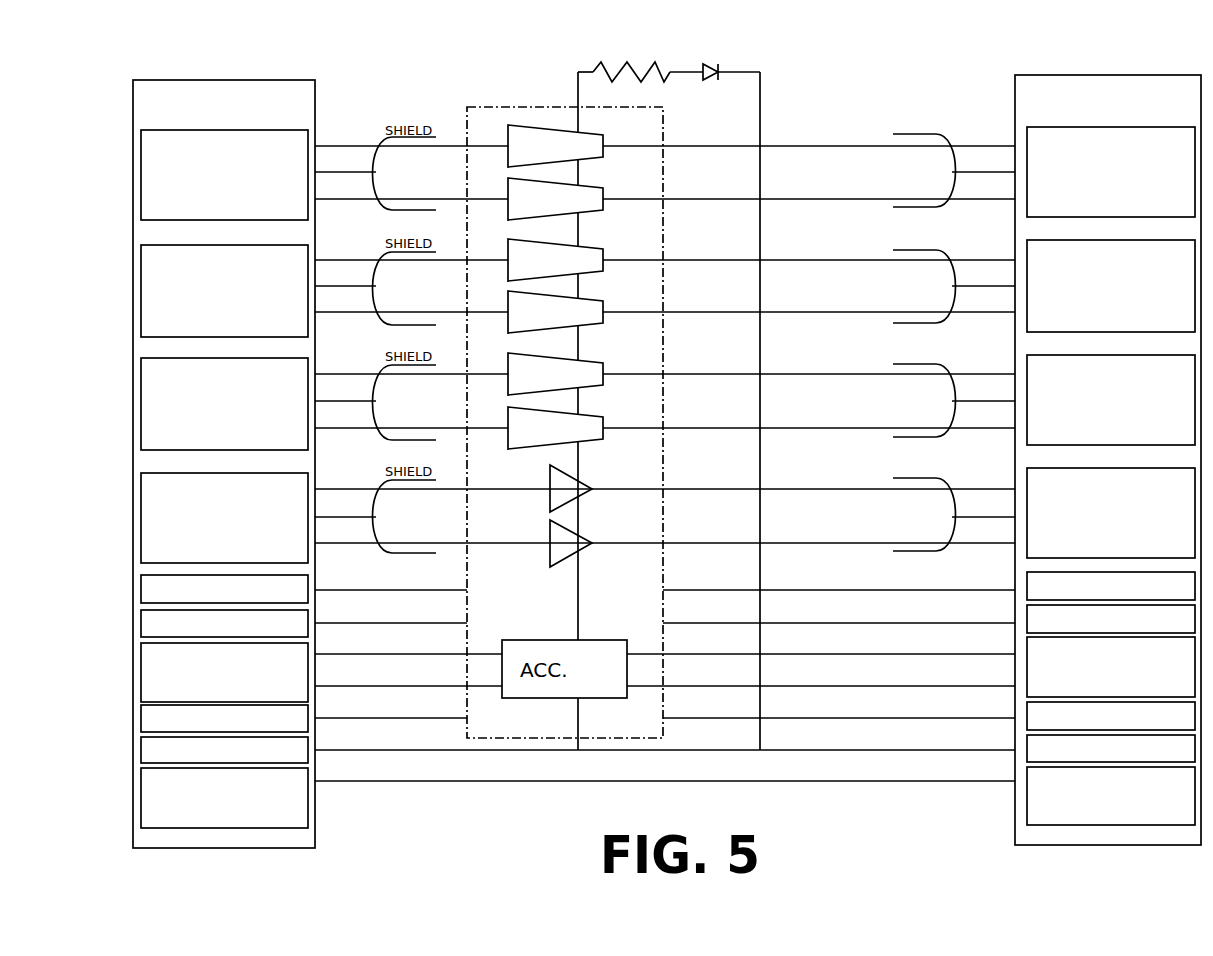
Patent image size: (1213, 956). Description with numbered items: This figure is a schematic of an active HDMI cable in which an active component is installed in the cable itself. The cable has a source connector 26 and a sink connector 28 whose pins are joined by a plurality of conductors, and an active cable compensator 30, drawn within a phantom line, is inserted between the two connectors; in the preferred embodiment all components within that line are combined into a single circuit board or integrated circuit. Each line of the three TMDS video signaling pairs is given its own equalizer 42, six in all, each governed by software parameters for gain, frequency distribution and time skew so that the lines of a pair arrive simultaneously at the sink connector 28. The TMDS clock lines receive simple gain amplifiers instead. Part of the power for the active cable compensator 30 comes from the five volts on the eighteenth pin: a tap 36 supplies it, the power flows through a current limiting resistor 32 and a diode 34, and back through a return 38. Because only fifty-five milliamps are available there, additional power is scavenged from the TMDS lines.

The source connector 26 is at (315, 100).
The sink connector 28 is at (1015, 95).
The active cable compensator 30 is at (553, 105).
The current limiting resistor 32 is at (627, 68).
The diode 34 is at (717, 66).
The tap 36 is at (578, 750).
The return 38 is at (760, 750).
The equalizer 42 is at (508, 180).